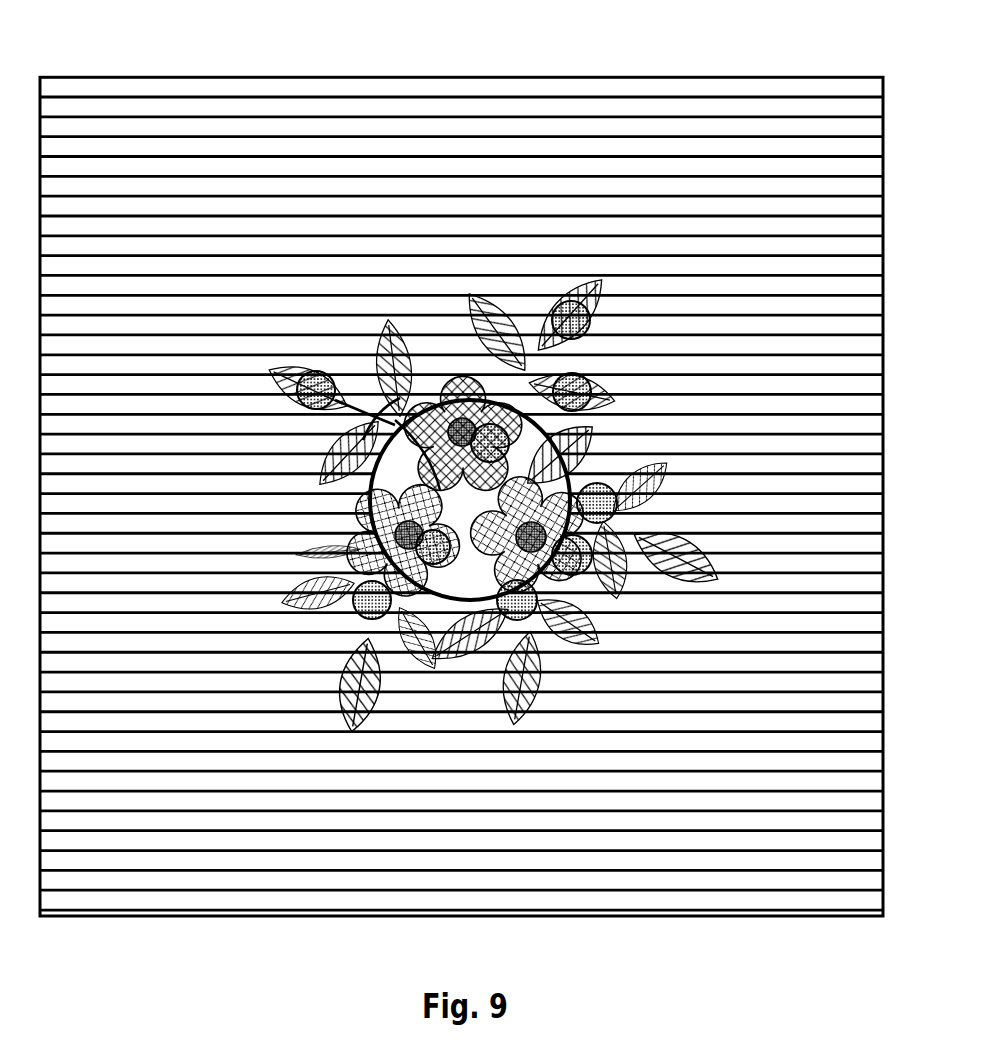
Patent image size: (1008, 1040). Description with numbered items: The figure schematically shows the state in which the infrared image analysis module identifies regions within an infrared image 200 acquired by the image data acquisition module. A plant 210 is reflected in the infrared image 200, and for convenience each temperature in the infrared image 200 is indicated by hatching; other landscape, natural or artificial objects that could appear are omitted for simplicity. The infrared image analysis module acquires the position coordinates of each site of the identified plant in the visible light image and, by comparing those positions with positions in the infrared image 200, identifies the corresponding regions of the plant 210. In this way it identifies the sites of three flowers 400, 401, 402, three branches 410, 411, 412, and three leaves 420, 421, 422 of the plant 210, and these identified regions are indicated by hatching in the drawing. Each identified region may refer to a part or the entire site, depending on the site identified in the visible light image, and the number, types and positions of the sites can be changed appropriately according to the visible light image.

The infrared image 200 is at (769, 100).
The plant 210 is at (601, 294).
The flower 400 is at (570, 440).
The flower 401 is at (618, 590).
The flower 402 is at (305, 556).
The branch 410 is at (618, 512).
The branch 411 is at (540, 622).
The branch 412 is at (385, 658).
The leaf 420 is at (598, 318).
The leaf 421 is at (592, 395).
The leaf 422 is at (273, 412).